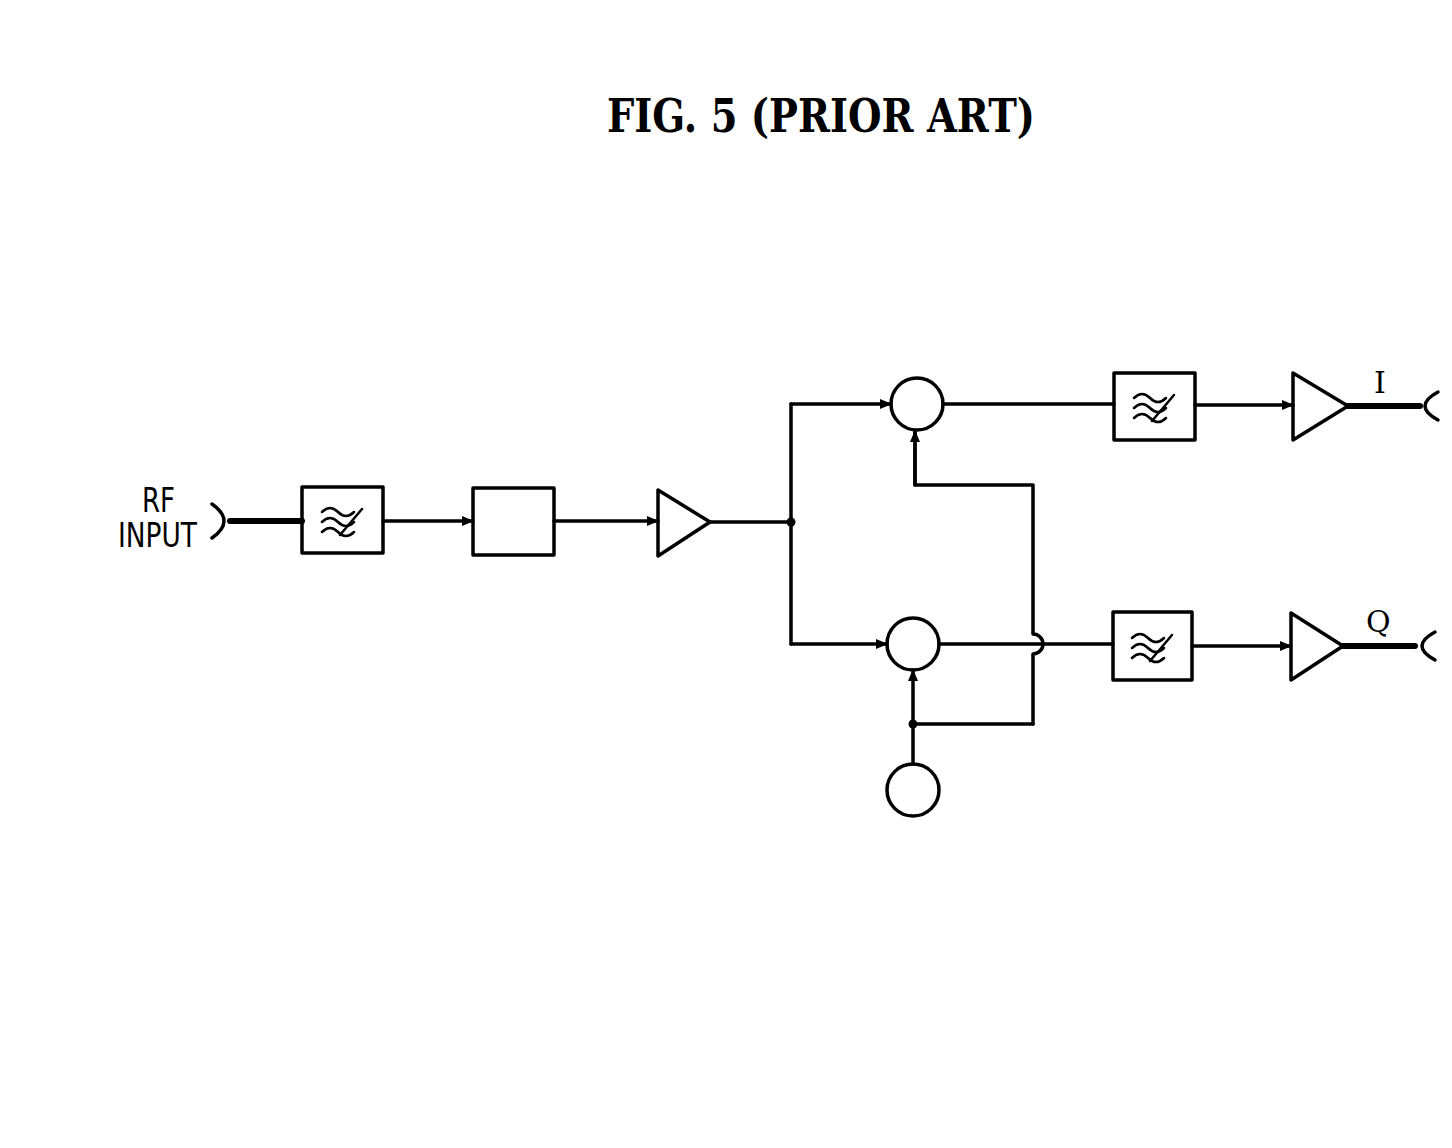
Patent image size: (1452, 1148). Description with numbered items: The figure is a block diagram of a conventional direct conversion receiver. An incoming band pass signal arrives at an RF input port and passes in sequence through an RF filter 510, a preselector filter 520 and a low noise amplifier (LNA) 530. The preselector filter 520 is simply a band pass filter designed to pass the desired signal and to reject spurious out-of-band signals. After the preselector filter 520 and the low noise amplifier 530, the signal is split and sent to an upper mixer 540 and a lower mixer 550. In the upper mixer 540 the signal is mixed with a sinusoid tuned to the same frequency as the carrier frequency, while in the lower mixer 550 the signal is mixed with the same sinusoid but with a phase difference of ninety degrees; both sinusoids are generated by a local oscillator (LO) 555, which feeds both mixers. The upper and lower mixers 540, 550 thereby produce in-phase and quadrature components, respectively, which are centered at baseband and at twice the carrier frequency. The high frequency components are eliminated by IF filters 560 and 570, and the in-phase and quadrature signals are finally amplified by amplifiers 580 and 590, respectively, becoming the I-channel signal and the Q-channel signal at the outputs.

The RF filter 510 is at (342, 487).
The preselector filter 520 is at (513, 488).
The low noise amplifier (LNA) 530 is at (685, 505).
The upper mixer 540 is at (915, 378).
The lower mixer 550 is at (914, 618).
The local oscillator (LO) 555 is at (913, 816).
The IF filter 560 is at (1155, 373).
The IF filter 570 is at (1152, 612).
The amplifier 580 is at (1320, 385).
The amplifier 590 is at (1318, 625).